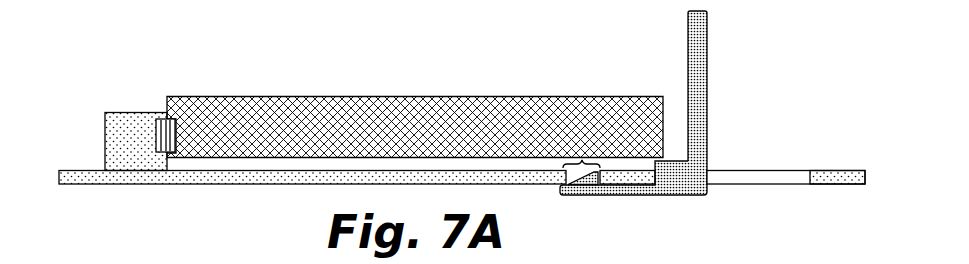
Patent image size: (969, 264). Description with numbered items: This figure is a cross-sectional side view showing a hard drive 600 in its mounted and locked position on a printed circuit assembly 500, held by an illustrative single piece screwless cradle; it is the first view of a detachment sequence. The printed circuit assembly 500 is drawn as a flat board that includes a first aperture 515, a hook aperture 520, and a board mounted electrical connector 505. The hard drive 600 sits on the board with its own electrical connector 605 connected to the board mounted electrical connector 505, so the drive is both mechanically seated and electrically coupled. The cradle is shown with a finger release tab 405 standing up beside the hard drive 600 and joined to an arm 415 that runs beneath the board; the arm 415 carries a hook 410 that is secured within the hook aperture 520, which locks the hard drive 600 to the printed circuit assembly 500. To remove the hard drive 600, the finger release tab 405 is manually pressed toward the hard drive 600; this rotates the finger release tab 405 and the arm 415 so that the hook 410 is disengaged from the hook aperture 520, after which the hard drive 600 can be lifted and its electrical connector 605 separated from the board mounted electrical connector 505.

The finger release tab 405 is at (697, 38).
The hook 410 is at (583, 188).
The arm 415 is at (675, 178).
The printed circuit assembly 500 is at (155, 175).
The board mounted electrical connector 505 is at (112, 135).
The first aperture 515 is at (758, 170).
The hook aperture 520 is at (582, 160).
The hard drive 600 is at (275, 105).
The electrical connector 605 is at (159, 122).